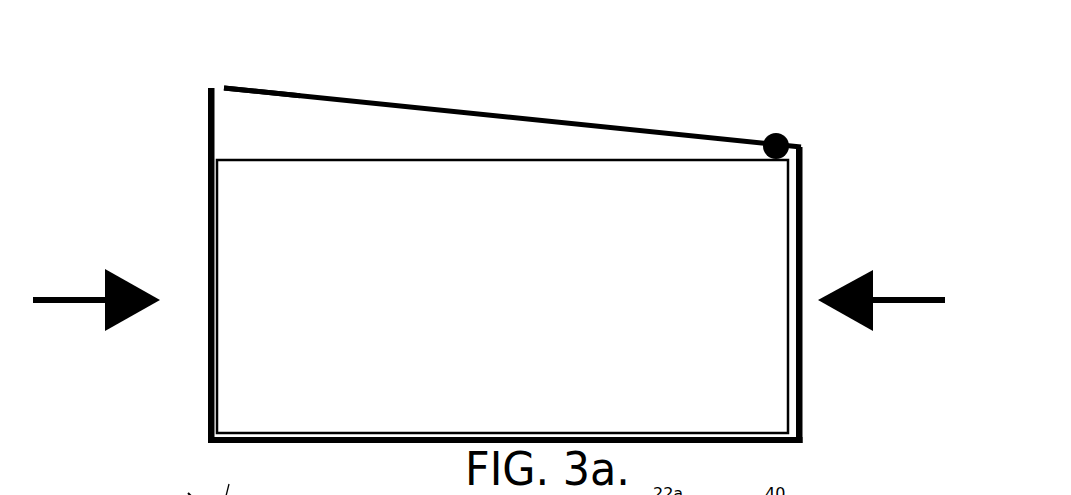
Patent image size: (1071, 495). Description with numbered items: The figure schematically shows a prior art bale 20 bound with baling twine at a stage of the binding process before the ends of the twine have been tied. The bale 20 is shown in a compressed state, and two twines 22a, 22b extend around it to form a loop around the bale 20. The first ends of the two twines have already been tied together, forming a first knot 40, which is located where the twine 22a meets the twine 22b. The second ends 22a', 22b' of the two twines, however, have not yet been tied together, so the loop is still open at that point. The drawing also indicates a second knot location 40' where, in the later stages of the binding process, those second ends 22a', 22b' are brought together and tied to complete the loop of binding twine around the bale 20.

The bale 20 is at (506, 300).
The twine 22a is at (512, 102).
The second end of twine 22a' is at (262, 55).
The twine 22b is at (561, 291).
The second end of twine 22b' is at (171, 247).
The first knot 40 is at (777, 113).
The hinge / pivot point (alternate) 40' is at (160, 464).